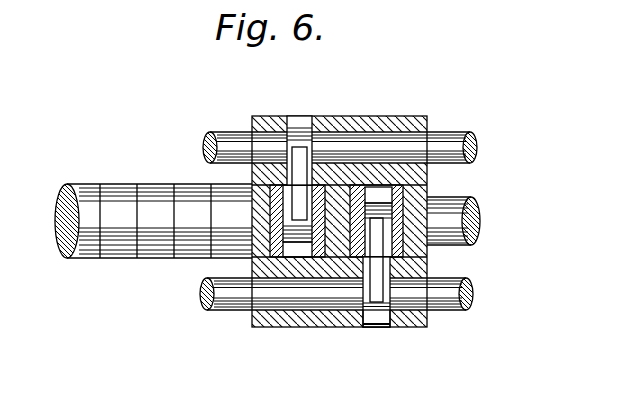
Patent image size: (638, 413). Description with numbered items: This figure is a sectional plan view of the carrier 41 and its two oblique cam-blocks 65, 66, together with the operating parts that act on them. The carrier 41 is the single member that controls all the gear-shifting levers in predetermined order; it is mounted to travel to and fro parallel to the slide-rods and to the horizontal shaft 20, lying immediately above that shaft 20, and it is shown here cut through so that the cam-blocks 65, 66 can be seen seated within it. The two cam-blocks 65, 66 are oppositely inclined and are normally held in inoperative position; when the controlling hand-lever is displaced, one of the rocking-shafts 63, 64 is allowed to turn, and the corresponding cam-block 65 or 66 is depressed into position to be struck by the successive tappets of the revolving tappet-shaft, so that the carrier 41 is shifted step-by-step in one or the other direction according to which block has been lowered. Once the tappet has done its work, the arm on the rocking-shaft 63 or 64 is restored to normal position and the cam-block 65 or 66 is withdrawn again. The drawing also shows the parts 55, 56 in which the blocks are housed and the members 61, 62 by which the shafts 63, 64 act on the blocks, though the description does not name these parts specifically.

The carrier 41 is at (383, 115).
The rocking-shaft 63 is at (220, 132).
The rocking-shaft 64 is at (222, 308).
The horizontal shaft 20 is at (480, 216).
The insert bushing 55 is at (297, 221).
The insert bushing 56 is at (376, 221).
The cam-block 65 is at (300, 116).
The upper locking pin 61 is at (300, 182).
The lower locking pin 62 is at (377, 262).
The cam-block 66 is at (376, 327).